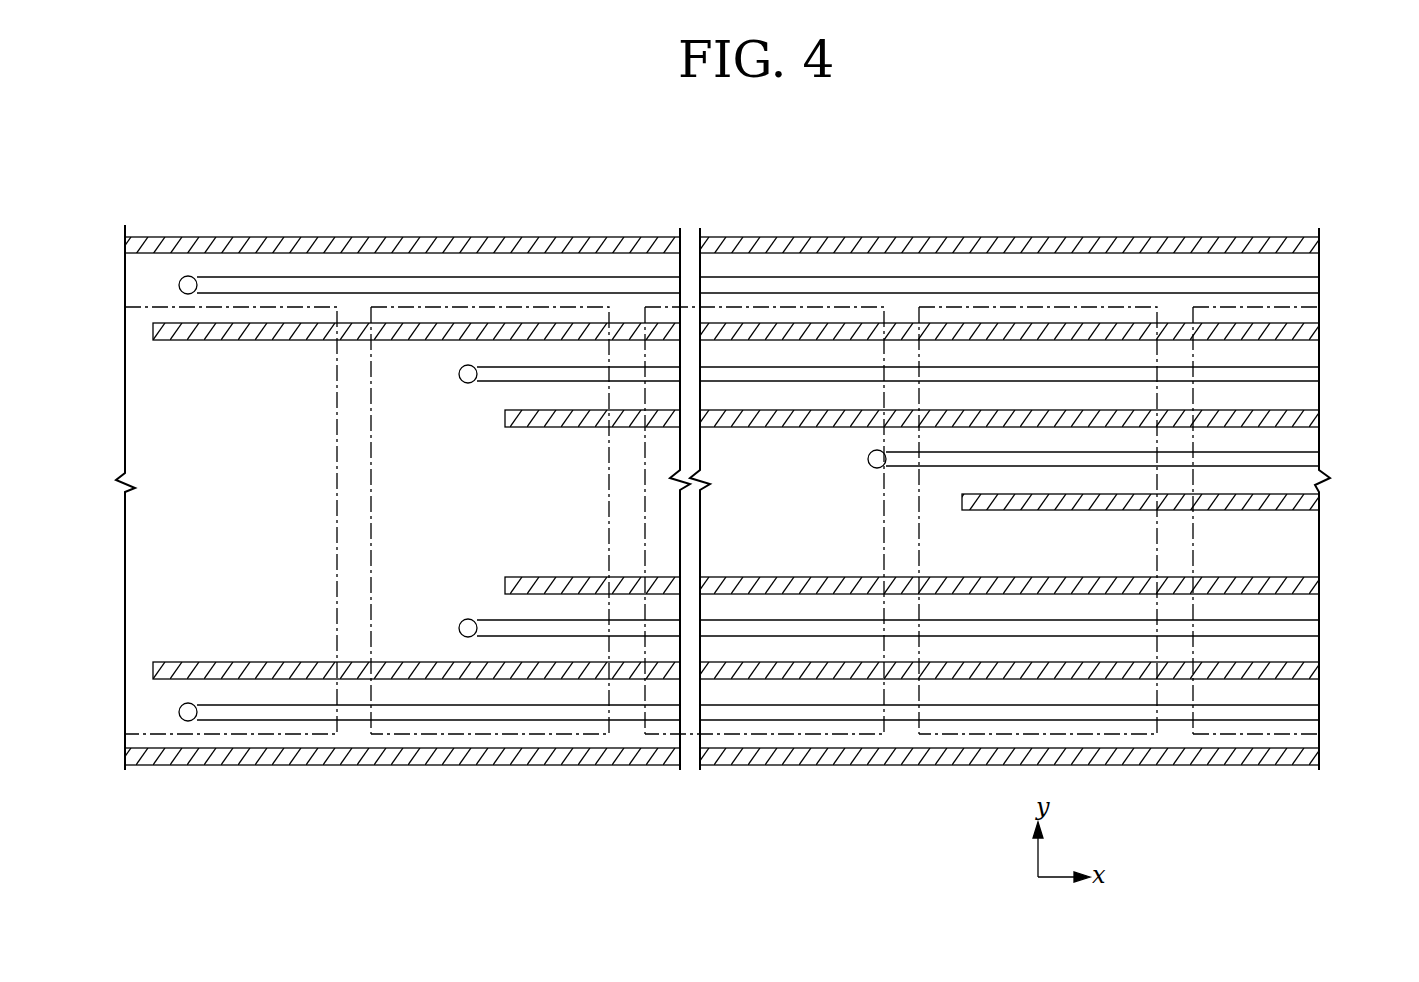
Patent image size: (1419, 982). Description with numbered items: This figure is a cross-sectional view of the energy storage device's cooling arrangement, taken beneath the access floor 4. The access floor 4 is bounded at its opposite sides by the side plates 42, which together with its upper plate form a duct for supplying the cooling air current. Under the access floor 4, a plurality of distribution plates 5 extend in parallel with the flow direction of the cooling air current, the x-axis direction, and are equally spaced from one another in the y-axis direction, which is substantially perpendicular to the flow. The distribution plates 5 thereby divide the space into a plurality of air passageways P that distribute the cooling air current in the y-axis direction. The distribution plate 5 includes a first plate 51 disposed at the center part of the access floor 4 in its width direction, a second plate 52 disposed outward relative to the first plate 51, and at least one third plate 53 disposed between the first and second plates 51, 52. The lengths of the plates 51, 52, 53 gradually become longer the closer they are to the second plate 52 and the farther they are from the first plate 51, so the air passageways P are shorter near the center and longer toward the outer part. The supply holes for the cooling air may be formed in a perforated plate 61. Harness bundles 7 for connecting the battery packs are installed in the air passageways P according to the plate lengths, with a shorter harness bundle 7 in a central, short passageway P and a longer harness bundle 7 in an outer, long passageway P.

The access floor 4 is at (714, 170).
The side plate 42 is at (1243, 757).
The air passageway P is at (1153, 403).
The distribution plate 5 is at (785, 416).
The first plate 51 is at (1283, 502).
The second plate 52 is at (1290, 331).
The third plate 53 is at (1305, 412).
The harness bundle 7 is at (970, 460).
The perforated plate 61 is at (923, 735).